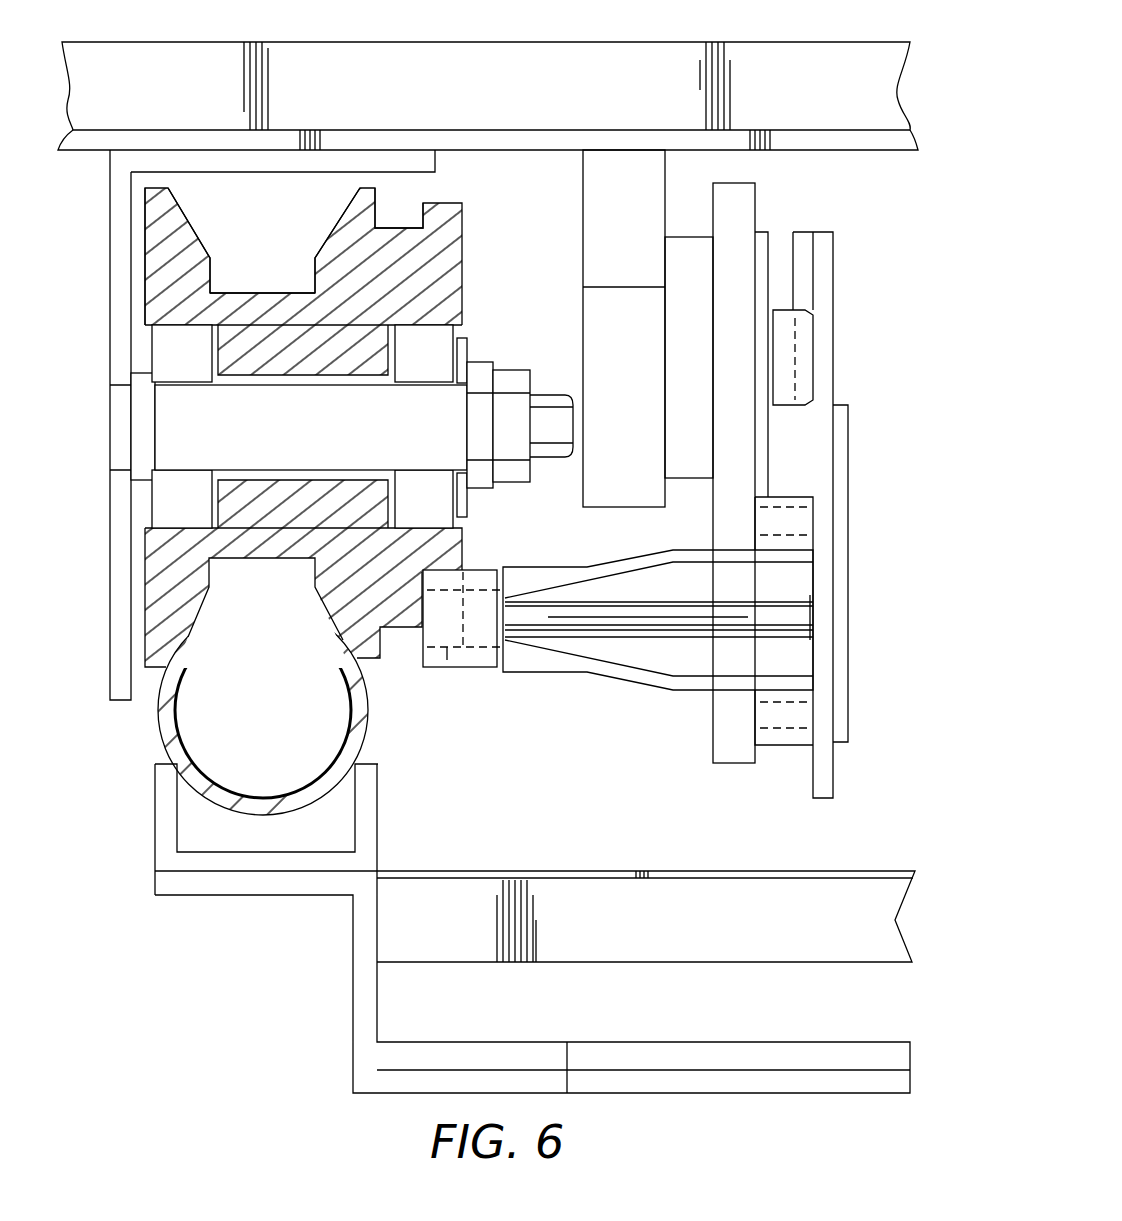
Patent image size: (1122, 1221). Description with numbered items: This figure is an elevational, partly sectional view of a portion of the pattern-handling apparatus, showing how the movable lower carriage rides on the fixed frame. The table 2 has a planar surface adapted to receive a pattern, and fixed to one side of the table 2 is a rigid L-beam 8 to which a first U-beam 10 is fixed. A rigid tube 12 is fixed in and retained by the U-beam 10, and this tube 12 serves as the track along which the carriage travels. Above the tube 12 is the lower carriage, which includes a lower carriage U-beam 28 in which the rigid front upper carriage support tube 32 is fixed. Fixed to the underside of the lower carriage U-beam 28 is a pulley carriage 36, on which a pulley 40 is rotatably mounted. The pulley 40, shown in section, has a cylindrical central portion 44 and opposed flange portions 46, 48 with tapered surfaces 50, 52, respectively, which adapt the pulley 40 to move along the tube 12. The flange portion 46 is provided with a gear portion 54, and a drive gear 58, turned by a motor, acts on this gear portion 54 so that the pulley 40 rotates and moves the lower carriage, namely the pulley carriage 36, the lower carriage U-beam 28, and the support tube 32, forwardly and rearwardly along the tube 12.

The table 2 is at (657, 936).
The L-beam 8 is at (226, 898).
The U-beam 10 is at (155, 800).
The tube 12 is at (158, 714).
The lower carriage U-beam 28 is at (96, 155).
The front upper carriage support tube 32 is at (208, 55).
The pulley carriage 36 is at (110, 302).
The pulley 40 is at (292, 448).
The cylindrical central portion 44 is at (270, 293).
The flange portion 46 is at (371, 208).
The flange portion 48 is at (153, 240).
The tapered surface 50 is at (326, 231).
The tapered surface 52 is at (188, 234).
The gear portion 54 is at (447, 660).
The drive gear 58 is at (464, 668).